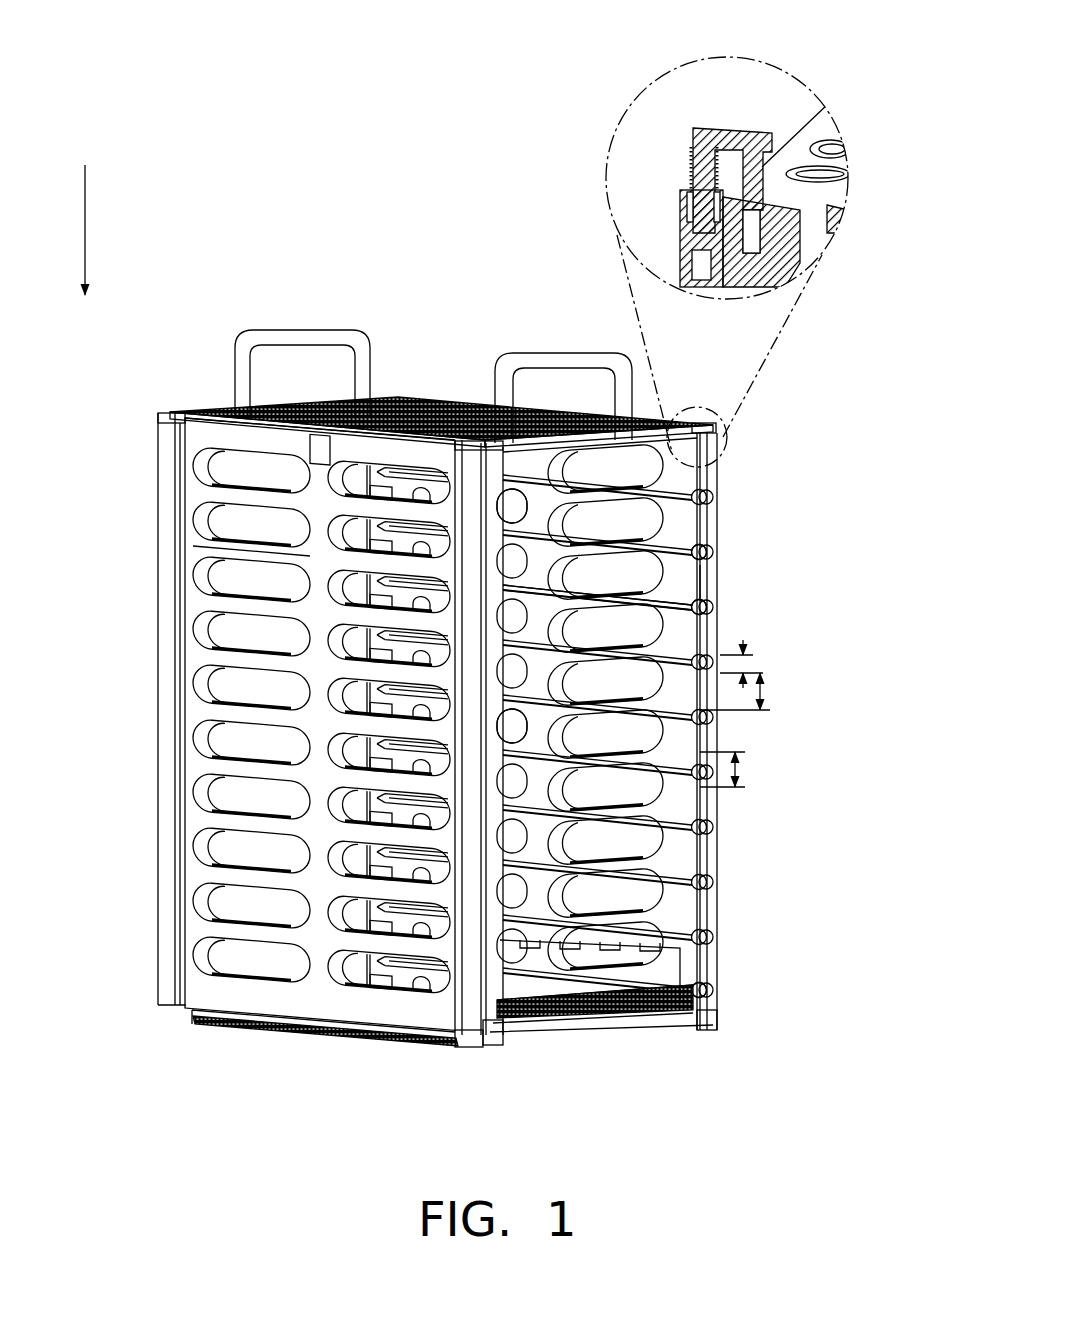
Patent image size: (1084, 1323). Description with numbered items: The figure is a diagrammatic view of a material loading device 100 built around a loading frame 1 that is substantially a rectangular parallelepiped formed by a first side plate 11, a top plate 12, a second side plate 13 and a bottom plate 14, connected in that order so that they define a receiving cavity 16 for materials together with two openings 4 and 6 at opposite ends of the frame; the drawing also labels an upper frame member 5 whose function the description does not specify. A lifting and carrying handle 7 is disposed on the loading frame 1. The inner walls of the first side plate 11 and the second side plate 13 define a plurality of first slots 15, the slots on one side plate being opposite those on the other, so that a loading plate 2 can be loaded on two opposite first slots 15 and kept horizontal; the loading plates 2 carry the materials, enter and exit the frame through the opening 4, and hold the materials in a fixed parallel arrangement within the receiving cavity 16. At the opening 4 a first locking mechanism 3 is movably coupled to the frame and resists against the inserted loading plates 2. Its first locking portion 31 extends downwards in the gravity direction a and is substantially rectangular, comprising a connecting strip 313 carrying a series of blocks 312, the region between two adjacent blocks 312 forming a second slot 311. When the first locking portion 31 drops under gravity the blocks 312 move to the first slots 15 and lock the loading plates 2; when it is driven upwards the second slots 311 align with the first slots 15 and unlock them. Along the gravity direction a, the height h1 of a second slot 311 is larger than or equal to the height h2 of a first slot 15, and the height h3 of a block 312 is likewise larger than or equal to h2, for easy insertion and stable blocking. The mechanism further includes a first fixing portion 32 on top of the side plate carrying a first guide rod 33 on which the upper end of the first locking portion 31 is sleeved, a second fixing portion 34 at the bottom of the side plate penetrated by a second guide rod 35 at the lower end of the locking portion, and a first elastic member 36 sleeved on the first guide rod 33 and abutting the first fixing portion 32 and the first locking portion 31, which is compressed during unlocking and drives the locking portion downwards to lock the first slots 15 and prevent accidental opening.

The material loading device 100 is at (512, 525).
The loading frame 1 is at (98, 612).
The first side plate 11 is at (292, 553).
The top plate 12 is at (397, 435).
The second side plate 13 is at (535, 513).
The bottom plate 14 is at (535, 1000).
The first slots 15 is at (678, 607).
The receiving cavity 16 is at (525, 733).
The loading plates 2 is at (642, 1015).
The first locking mechanism 3 is at (890, 378).
The first locking portion 31 is at (705, 283).
The second slots 311 is at (720, 545).
The block 312 is at (712, 583).
The connecting strip 313 is at (706, 607).
The first fixing portion 32 is at (803, 267).
The first guide rod 33 is at (743, 287).
The second fixing portion 34 is at (703, 1012).
The second guide rod 35 is at (708, 985).
The first elastic member 36 is at (777, 277).
The opening 4 is at (591, 1023).
The top plate 5 is at (170, 413).
The opening 6 is at (155, 484).
The lifting and carrying handle 7 is at (313, 342).
The gravity direction a is at (67, 230).
The height of cross-section of second slot h1 is at (755, 664).
The height of cross-section of first slot h2 is at (740, 772).
The height of cross-section of block h3 is at (753, 695).